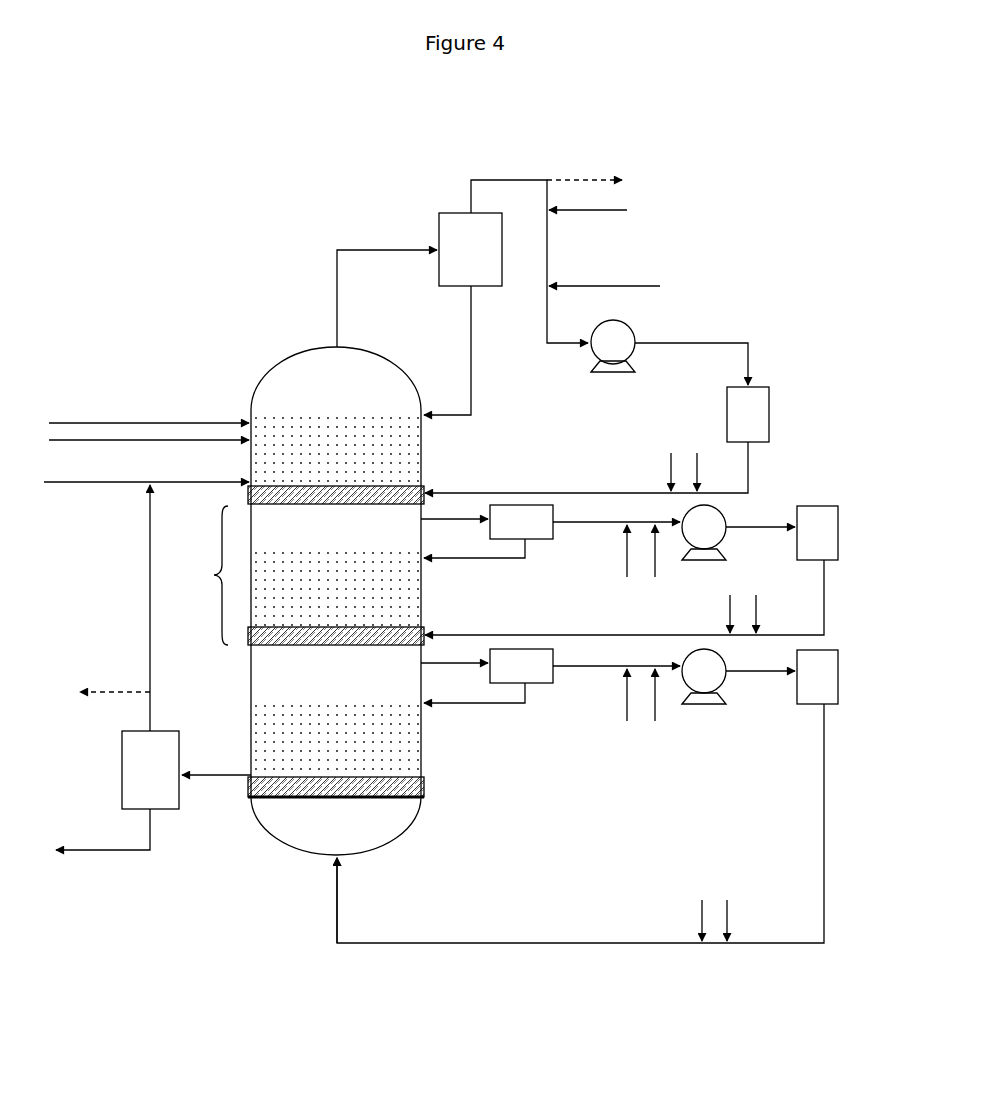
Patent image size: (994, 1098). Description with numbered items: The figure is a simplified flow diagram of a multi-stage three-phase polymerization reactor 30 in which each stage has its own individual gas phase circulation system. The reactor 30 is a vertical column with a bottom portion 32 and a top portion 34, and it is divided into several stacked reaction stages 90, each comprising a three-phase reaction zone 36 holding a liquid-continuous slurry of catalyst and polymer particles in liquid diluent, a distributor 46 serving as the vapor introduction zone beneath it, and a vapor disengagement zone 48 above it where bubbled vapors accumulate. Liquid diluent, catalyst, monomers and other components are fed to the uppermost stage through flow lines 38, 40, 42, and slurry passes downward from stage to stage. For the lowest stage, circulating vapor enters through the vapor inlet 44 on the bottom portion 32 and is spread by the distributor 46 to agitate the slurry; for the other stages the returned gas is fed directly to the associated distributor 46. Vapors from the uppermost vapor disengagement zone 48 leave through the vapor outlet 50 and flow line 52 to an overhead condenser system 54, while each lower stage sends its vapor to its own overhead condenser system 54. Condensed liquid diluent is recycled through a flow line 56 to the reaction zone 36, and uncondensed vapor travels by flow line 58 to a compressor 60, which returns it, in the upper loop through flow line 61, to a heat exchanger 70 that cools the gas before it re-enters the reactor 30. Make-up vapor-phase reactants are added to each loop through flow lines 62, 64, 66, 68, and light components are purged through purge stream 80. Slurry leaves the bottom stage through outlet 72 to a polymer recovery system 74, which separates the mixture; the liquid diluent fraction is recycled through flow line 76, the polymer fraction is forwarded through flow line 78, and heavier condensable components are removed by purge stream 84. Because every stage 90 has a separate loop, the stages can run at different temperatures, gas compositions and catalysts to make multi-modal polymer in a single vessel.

The three-phase reactor 30 is at (246, 202).
The bottom portion 32 is at (265, 832).
The top portion 34 is at (388, 358).
The three-phase reaction zone 36 is at (336, 594).
The flow line 38 is at (146, 493).
The flow line 40 is at (149, 453).
The flow line 42 is at (147, 423).
The vapor inlet 44 is at (326, 858).
The distributor 46 is at (400, 492).
The vapor disengagement zone 48 is at (330, 530).
The vapor outlet 50 is at (338, 346).
The flow line 52 is at (337, 303).
The overhead condenser system 54 is at (487, 448).
The flow line 56 is at (474, 380).
The flow line 58 is at (547, 338).
The compressor 60 is at (611, 372).
The flow line 61 is at (716, 343).
The flow line 62 is at (604, 215).
The flow line 64 is at (633, 286).
The flow line 66 is at (686, 696).
The flow line 68 is at (741, 696).
The heat exchanger 70 is at (587, 665).
The outlet 72 is at (244, 780).
The polymer recovery system 74 is at (150, 770).
The flow line 76 is at (151, 718).
The flow line 78 is at (122, 850).
The purge stream 80 is at (577, 180).
The purge stream 84 is at (110, 694).
The reaction stage 90 is at (204, 575).